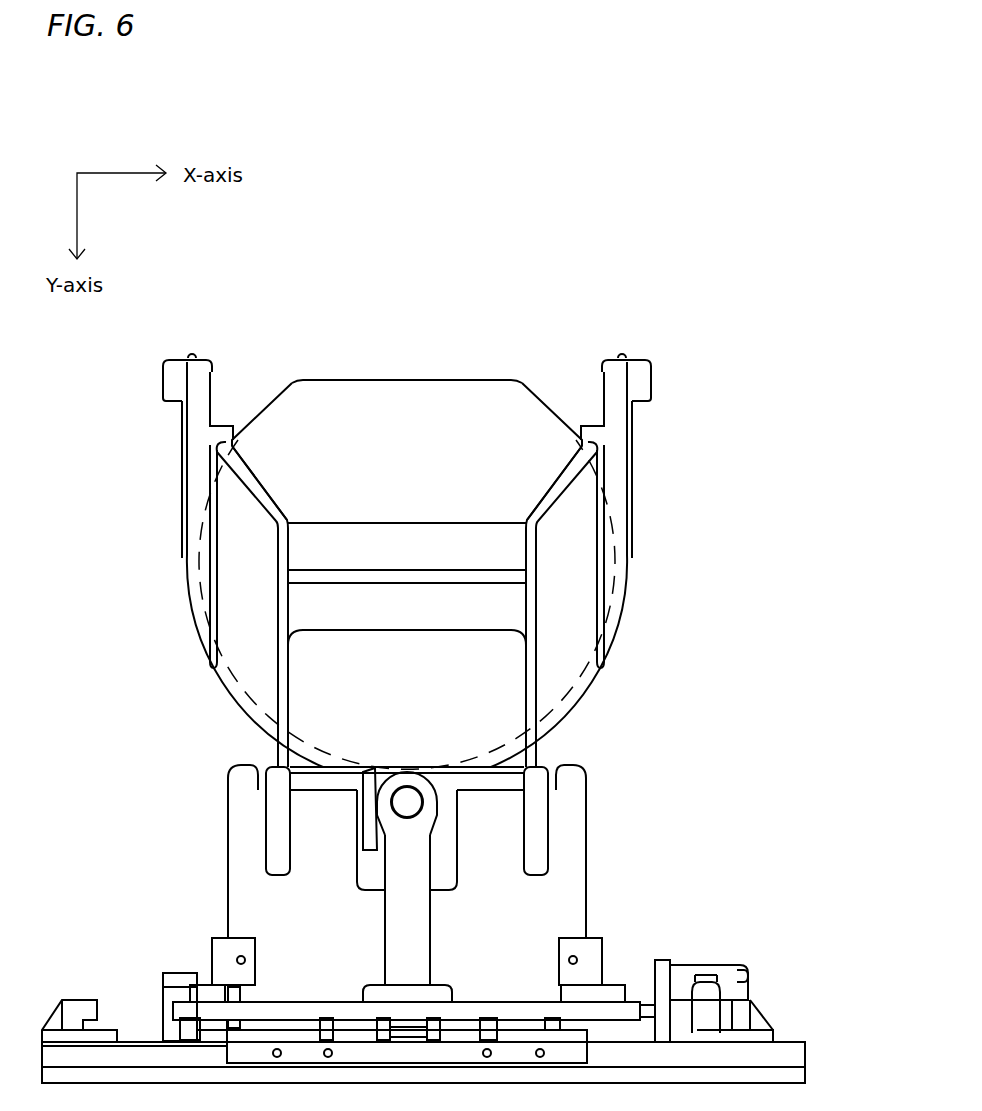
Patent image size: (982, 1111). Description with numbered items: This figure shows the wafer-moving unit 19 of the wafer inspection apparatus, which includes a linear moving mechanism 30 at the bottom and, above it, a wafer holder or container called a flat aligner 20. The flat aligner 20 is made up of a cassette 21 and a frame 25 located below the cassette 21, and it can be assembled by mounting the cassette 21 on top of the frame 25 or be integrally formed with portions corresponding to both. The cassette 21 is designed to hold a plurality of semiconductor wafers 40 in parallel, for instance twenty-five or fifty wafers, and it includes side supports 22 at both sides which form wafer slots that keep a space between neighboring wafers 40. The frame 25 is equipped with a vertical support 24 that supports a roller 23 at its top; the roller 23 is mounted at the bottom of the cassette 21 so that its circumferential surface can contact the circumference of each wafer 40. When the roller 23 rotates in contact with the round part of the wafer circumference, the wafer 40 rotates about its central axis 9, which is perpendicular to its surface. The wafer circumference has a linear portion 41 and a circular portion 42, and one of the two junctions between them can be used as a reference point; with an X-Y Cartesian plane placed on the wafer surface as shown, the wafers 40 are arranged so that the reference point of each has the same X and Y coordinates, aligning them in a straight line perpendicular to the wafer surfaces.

The wafer-moving unit 19 is at (722, 250).
The flat aligner 20 is at (148, 560).
The cassette 21 is at (633, 462).
The side supports 22 is at (492, 607).
The roller 23 is at (407, 788).
The vertical support 24 is at (418, 935).
The frame 25 is at (588, 840).
The linear moving mechanism 30 is at (786, 996).
The semiconductor wafer 40 is at (337, 406).
The linear portion 41 is at (390, 378).
The circular portion 42 is at (583, 443).
The central axis 9 is at (407, 560).